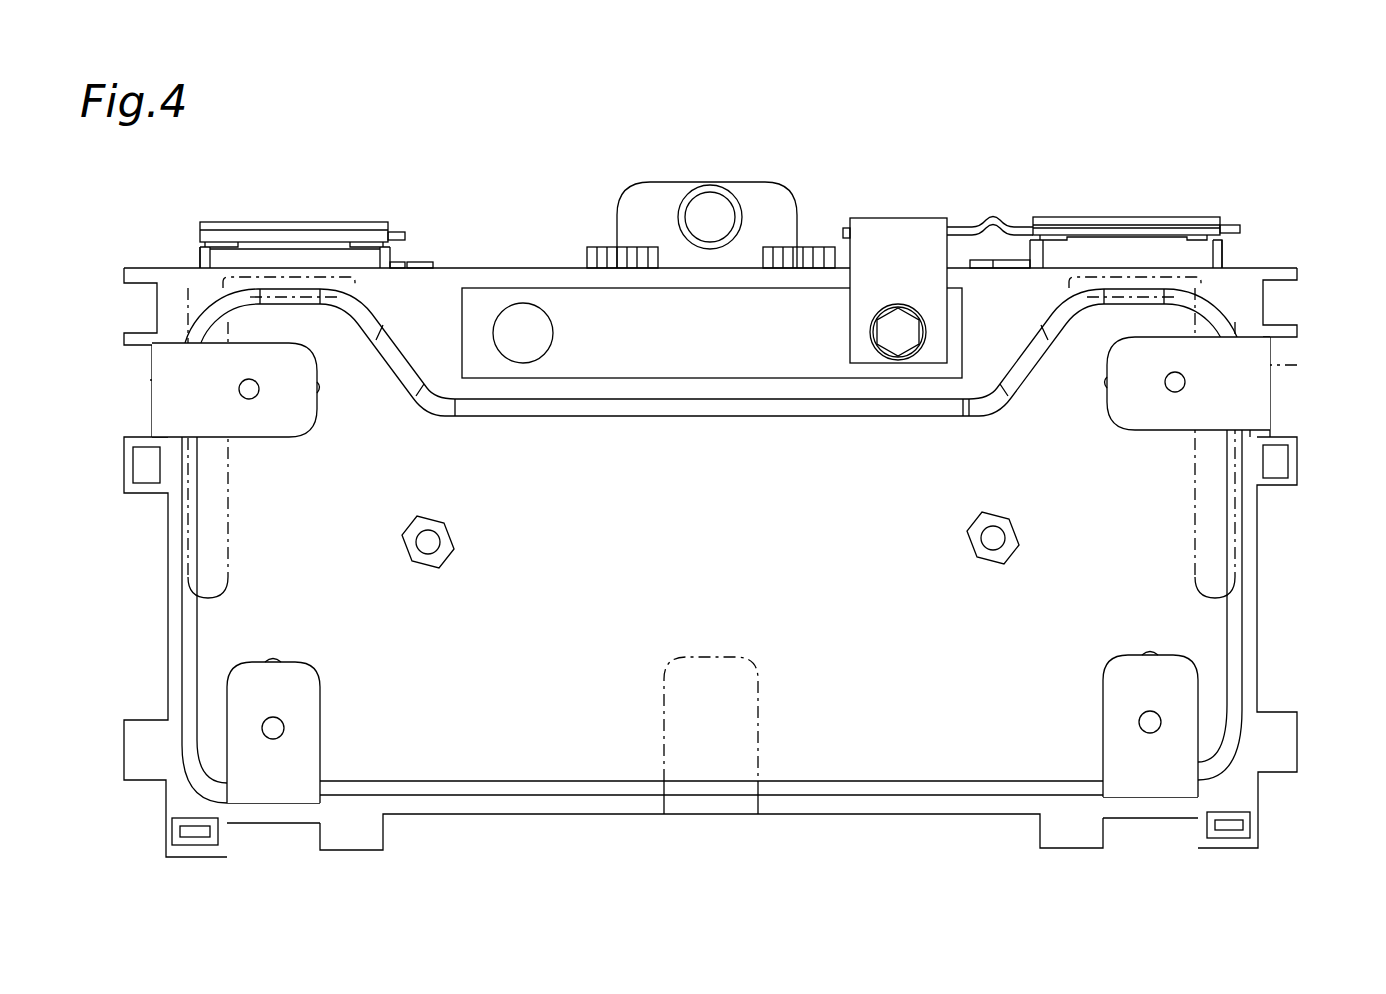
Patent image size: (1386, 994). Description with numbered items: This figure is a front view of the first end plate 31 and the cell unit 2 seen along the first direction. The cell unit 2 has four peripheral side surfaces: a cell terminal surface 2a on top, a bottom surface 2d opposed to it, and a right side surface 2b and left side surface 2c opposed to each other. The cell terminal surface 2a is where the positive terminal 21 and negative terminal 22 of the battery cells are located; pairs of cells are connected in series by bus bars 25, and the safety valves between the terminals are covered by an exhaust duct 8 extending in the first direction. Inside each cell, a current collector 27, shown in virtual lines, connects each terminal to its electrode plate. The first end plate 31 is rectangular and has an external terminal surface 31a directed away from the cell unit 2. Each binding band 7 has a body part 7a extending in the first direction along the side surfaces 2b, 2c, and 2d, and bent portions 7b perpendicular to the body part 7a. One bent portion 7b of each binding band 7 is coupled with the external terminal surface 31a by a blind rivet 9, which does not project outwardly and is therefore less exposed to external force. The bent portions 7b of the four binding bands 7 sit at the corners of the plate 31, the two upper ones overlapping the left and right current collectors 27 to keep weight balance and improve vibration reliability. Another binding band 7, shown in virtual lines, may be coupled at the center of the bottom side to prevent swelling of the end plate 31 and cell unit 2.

The cell unit 2 is at (716, 509).
The cell terminal surface 2a is at (512, 262).
The right side surface 2b is at (1262, 532).
The left side surface 2c is at (165, 517).
The bottom surface 2d is at (588, 820).
The binding band 7 is at (715, 619).
The body part 7a is at (152, 400).
The bent portion 7b is at (282, 425).
The exhaust duct 8 is at (714, 182).
The blind rivet 9 is at (272, 728).
The positive terminal 21 is at (217, 262).
The negative terminal 22 is at (1200, 255).
The bus bar 25 is at (298, 221).
The current collector 27 is at (175, 380).
The first end plate 31 is at (800, 320).
The external terminal surface 31a is at (835, 425).